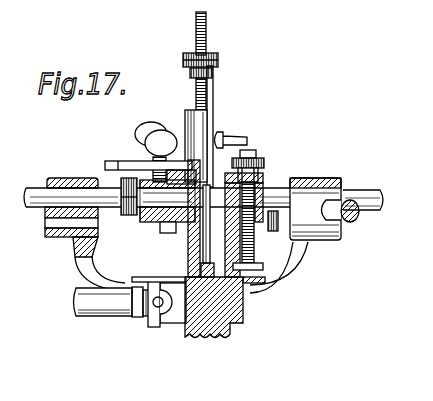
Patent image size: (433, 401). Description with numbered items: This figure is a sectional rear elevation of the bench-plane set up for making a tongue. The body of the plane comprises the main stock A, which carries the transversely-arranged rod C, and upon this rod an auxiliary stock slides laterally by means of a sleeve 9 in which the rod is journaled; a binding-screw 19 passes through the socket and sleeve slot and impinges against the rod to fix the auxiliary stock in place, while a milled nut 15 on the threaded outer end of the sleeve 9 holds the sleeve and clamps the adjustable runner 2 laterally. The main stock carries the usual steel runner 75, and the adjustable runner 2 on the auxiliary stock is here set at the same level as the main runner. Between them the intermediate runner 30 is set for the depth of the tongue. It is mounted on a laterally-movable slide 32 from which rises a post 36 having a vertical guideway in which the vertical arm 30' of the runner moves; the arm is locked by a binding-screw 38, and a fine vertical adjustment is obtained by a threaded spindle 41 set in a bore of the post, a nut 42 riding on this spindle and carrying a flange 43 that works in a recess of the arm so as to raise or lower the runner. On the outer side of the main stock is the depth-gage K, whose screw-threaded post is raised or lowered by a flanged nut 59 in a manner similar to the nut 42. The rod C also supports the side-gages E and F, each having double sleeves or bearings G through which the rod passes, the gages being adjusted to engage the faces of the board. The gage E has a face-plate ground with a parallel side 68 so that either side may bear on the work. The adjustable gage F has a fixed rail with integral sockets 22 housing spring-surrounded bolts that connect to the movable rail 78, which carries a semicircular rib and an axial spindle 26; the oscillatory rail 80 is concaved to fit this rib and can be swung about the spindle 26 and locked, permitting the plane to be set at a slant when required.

The threaded rod or spindle 41 is at (205, 33).
The nut 42 is at (216, 58).
The flange 43 is at (191, 76).
The vertical arm of the intermediate runner 30' is at (226, 126).
The post or bracket 36 is at (205, 122).
The binding-screw 38 is at (237, 137).
The binding-screw 19 is at (158, 131).
The laterally-movable slide 32 is at (114, 161).
The flanged nut 59 is at (255, 157).
The main stock A is at (230, 184).
The depth-gage or stop K is at (250, 245).
The steel blade or runner 75 is at (252, 259).
The adjustable blade or runner 2 is at (192, 260).
The intermediate blade or runner 30 is at (185, 231).
The milled nut 15 is at (128, 215).
The sleeve 9 is at (163, 198).
The double sleeve or socket (bearing) G is at (70, 178).
The rod or pin C is at (274, 192).
The adjustable gage F is at (104, 270).
The gage E is at (279, 267).
The socket 22 is at (109, 302).
The rod or spindle 26 is at (143, 314).
The auxiliary rail (movable rail) 78 is at (150, 318).
The oscillatory rail 80 is at (178, 310).
The parallel side of face-plate 68 is at (243, 311).